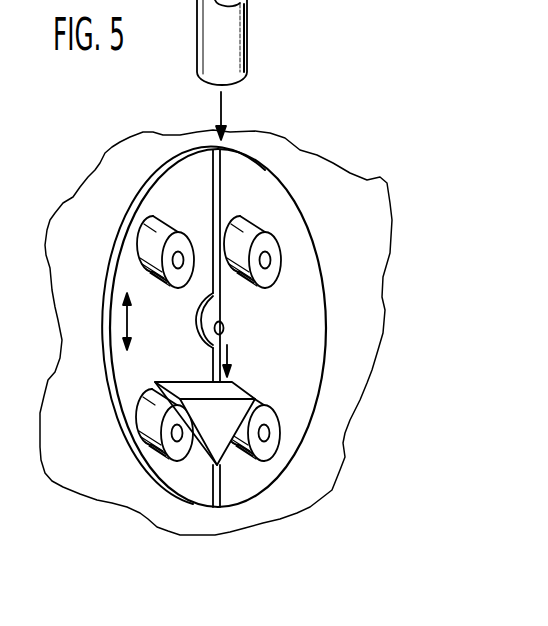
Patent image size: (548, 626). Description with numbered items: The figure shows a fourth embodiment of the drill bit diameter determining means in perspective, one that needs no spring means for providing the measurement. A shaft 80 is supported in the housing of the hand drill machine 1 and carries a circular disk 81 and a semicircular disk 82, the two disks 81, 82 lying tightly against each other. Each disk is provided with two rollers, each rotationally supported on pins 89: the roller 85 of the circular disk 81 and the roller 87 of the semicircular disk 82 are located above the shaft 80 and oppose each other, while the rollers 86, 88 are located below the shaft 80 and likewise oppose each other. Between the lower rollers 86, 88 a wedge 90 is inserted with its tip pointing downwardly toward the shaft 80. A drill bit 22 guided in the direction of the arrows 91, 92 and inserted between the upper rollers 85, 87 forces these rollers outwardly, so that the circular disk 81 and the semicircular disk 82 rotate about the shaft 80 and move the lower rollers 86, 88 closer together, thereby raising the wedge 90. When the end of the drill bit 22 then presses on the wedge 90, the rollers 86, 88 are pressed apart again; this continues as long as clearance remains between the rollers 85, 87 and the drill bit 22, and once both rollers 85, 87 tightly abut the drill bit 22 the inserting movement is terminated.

The hand drill machine 1 is at (364, 303).
The drill bit 22 is at (228, 40).
The shaft 80 is at (224, 326).
The circular disk 81 is at (164, 197).
The semicircular disk 82 is at (274, 208).
The roller 85 is at (155, 235).
The roller 86 is at (148, 422).
The roller 87 is at (272, 243).
The roller 88 is at (268, 423).
The pins 89 is at (173, 259).
The wedge 90 is at (205, 393).
The arrow 91 is at (222, 112).
The arrow 92 is at (228, 352).